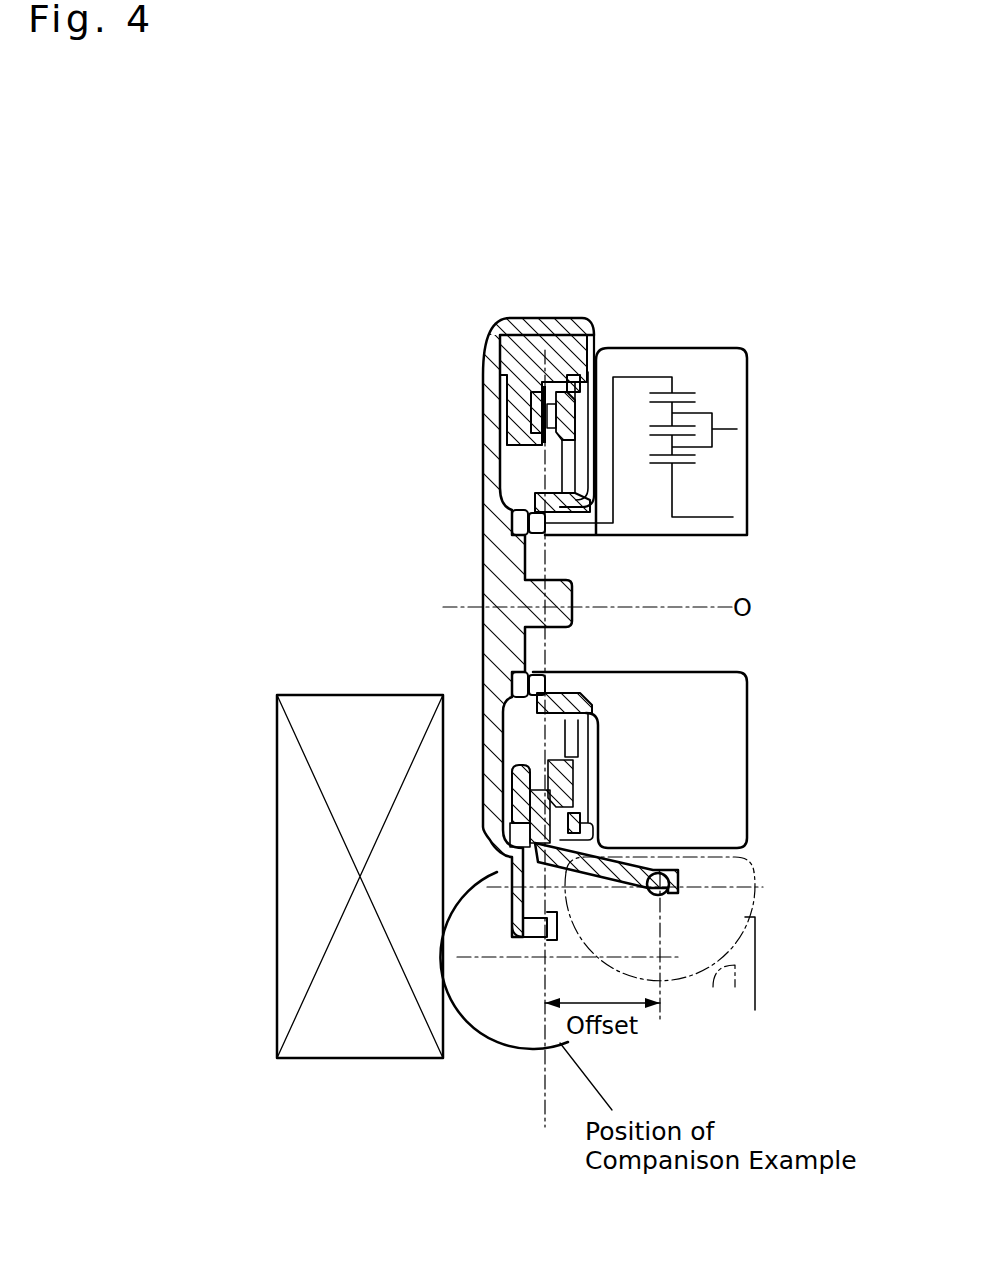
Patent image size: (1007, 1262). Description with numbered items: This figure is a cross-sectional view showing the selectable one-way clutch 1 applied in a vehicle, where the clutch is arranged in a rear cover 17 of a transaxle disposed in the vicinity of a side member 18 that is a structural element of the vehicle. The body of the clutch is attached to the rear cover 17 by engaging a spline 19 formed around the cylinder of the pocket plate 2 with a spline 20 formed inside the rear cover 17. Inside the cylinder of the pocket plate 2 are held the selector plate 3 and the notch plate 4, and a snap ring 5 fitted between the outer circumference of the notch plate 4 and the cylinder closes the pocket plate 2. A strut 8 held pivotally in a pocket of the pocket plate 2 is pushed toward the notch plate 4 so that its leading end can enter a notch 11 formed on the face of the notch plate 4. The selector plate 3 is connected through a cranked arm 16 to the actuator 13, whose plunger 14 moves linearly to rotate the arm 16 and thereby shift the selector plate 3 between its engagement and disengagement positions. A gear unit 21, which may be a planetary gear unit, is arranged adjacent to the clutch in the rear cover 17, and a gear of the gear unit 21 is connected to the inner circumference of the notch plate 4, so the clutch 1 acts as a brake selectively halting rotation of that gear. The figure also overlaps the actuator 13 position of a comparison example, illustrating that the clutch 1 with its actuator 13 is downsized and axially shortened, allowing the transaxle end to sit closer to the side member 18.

The selectable one-way clutch 1 is at (523, 449).
The pocket plate 2 is at (520, 420).
The selector plate 3 is at (543, 447).
The notch plate 4 is at (572, 420).
The snap ring 5 is at (574, 812).
The strut 8 is at (535, 410).
The notch 11 is at (548, 398).
The actuator 13 is at (747, 903).
The plunger 14 is at (663, 897).
The arm 16 is at (635, 862).
The rear cover 17 is at (483, 637).
The side member 18 is at (277, 855).
The spline 19 is at (512, 342).
The spline 20 is at (524, 350).
The gear unit 21 is at (747, 420).